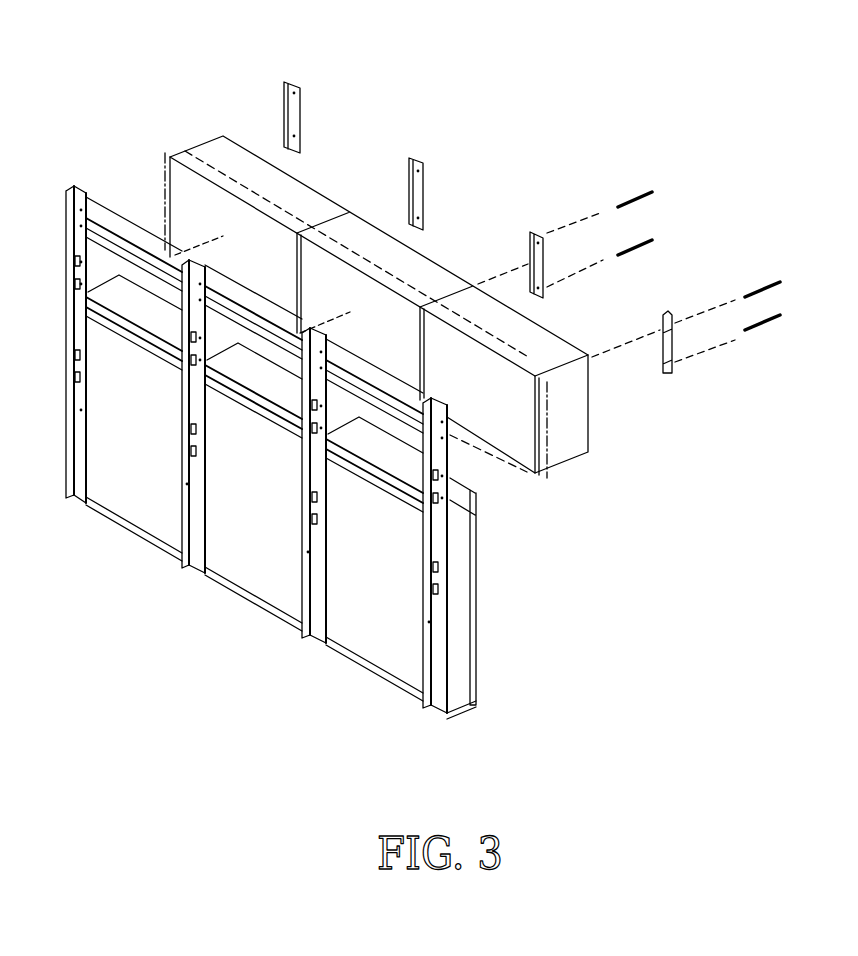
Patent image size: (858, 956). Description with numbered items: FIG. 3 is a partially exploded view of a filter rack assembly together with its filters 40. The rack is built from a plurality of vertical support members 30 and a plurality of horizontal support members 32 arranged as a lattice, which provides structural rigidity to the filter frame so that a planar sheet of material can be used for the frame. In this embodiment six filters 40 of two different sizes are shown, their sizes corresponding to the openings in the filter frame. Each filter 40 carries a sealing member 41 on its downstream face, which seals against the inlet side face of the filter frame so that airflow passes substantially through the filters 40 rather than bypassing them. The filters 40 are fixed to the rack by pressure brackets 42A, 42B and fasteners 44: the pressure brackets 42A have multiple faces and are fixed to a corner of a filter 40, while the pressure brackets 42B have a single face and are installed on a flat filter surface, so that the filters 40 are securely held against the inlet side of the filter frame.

The vertical support member 30 is at (67, 470).
The horizontal support member 32 is at (115, 230).
The filter 40 is at (254, 158).
The sealing member 41 is at (195, 150).
The pressure bracket 42A is at (286, 82).
The pressure bracket 42B is at (424, 164).
The fastener 44 is at (655, 190).